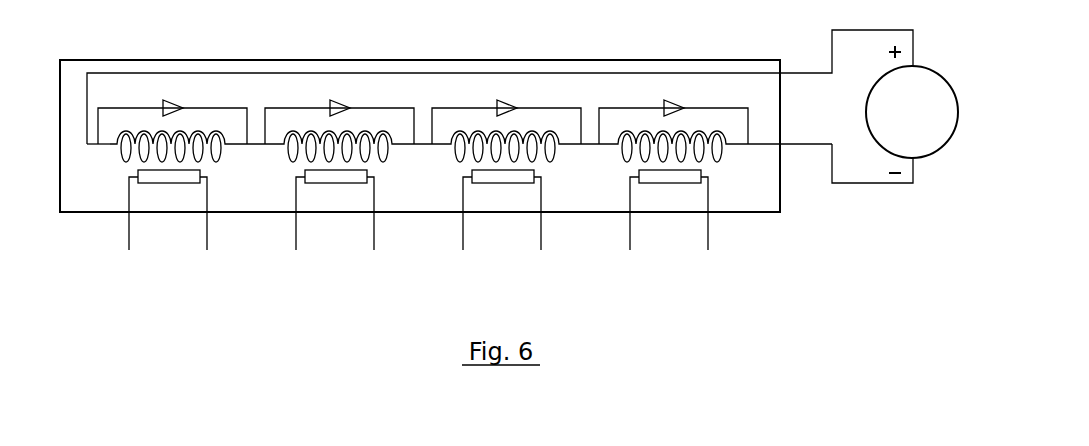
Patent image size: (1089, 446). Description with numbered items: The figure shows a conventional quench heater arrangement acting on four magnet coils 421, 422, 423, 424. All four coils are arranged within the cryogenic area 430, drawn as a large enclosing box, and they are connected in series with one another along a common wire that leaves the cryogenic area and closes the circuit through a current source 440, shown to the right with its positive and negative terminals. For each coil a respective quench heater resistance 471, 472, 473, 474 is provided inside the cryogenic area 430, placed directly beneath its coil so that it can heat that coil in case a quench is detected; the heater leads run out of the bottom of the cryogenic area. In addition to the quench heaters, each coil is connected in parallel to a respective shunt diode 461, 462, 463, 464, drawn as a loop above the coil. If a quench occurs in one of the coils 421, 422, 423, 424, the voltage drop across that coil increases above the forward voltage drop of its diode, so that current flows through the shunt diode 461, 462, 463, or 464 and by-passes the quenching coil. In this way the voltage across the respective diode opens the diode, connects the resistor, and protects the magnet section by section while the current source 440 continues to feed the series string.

The cryogenic area 430 is at (143, 57).
The current source 440 is at (953, 133).
The coil 421 is at (220, 163).
The coil 422 is at (387, 163).
The coil 423 is at (554, 163).
The coil 424 is at (721, 163).
The shunt diode 461 is at (181, 107).
The shunt diode 462 is at (357, 100).
The shunt diode 463 is at (518, 100).
The shunt diode 464 is at (685, 100).
The quench heater resistance 471 is at (153, 183).
The quench heater resistance 472 is at (325, 183).
The quench heater resistance 473 is at (497, 183).
The quench heater resistance 474 is at (668, 183).